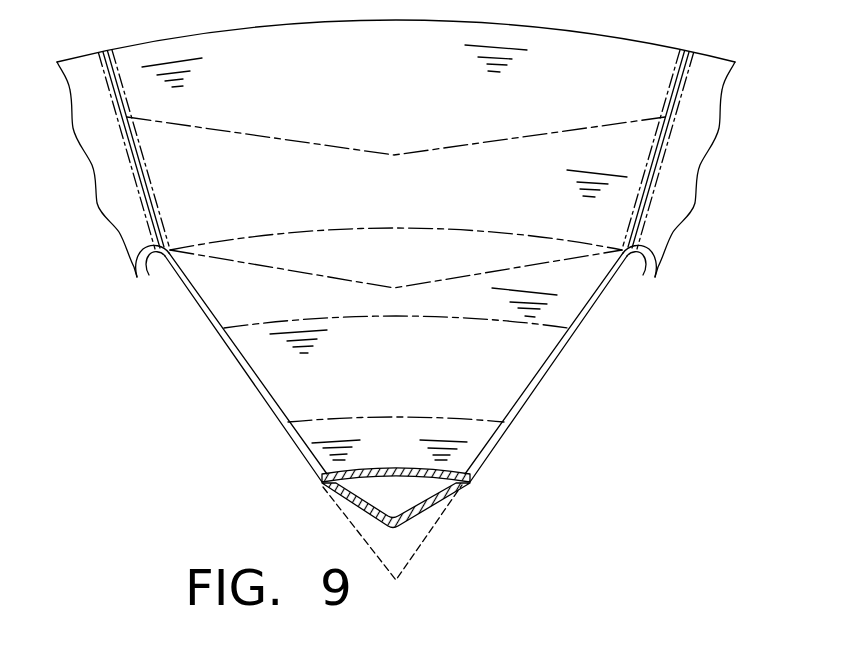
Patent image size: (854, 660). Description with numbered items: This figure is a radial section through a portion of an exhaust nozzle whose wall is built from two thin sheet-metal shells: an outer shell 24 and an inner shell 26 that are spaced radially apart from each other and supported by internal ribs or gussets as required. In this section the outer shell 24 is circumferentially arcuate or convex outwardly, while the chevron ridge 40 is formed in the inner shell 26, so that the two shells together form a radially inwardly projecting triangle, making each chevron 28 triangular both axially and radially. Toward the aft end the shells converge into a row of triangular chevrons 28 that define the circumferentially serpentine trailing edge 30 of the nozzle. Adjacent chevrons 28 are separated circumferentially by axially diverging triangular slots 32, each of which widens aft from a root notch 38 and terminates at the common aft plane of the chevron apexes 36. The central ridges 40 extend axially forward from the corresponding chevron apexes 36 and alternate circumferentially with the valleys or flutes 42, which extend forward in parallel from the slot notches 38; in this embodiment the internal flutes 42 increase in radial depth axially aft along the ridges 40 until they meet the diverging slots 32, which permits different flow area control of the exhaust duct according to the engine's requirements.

The outer shell 24 is at (705, 157).
The inner shell 26 is at (442, 503).
The chevron 28 is at (444, 375).
The trailing edge 30 is at (542, 373).
The slot 32 is at (212, 376).
The apex 36 is at (396, 580).
The root notch 38 is at (633, 262).
The ridge 40 is at (403, 525).
The flute 42 is at (159, 265).